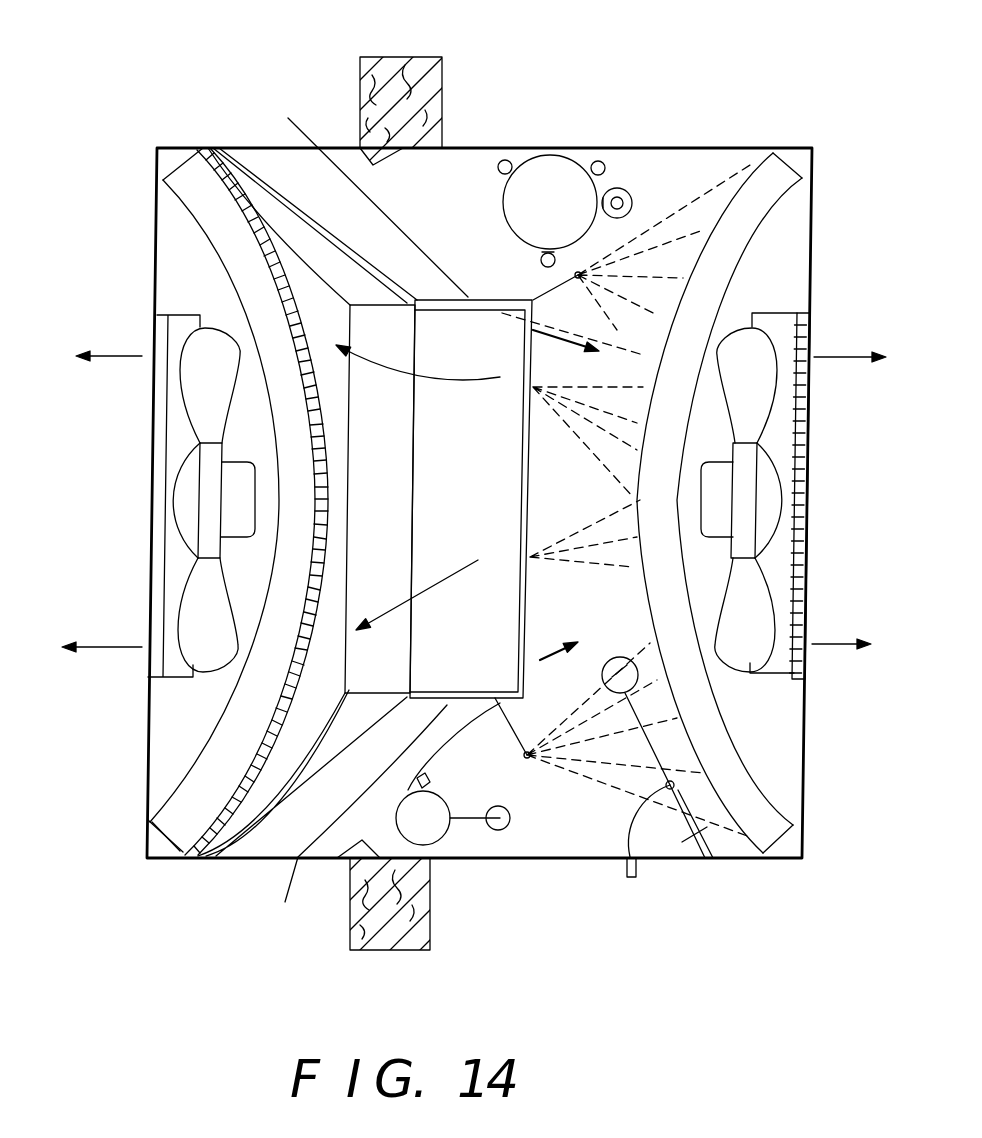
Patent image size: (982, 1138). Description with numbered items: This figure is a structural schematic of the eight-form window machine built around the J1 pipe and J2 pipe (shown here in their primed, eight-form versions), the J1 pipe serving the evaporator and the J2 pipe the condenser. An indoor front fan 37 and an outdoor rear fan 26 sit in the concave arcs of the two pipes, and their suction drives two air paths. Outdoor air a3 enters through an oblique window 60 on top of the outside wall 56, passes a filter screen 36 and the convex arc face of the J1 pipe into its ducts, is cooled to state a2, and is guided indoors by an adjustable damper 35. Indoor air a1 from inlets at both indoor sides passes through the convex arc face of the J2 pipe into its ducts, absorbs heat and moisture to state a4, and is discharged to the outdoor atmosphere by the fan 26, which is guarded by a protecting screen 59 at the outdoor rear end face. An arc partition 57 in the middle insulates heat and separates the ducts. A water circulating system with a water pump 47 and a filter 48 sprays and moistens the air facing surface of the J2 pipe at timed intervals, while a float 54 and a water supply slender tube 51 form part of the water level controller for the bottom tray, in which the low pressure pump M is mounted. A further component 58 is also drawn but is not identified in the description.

The outdoor rear fan 26 is at (757, 648).
The adjustable damper 35 is at (152, 667).
The filter screen 36 is at (232, 773).
The indoor front fan 37 is at (212, 648).
The water pump 47 is at (440, 840).
The filter 48 is at (505, 831).
The water supply slender tube 51 is at (636, 866).
The float 54 is at (648, 743).
The outside wall 56 is at (377, 85).
The arc partition 57 is at (302, 212).
The heat absorbing plate 58 is at (243, 146).
The protecting screen 59 is at (812, 316).
The oblique window 60 is at (518, 705).
The low pressure pump M is at (528, 153).
The J1 pipe J1 is at (104, 806).
The J2 pipe J2 is at (765, 817).
The indoor air a1 is at (363, 501).
The cooled air state a2 is at (103, 483).
The outdoor air a3 is at (425, 483).
The heated moist air state a4 is at (849, 482).